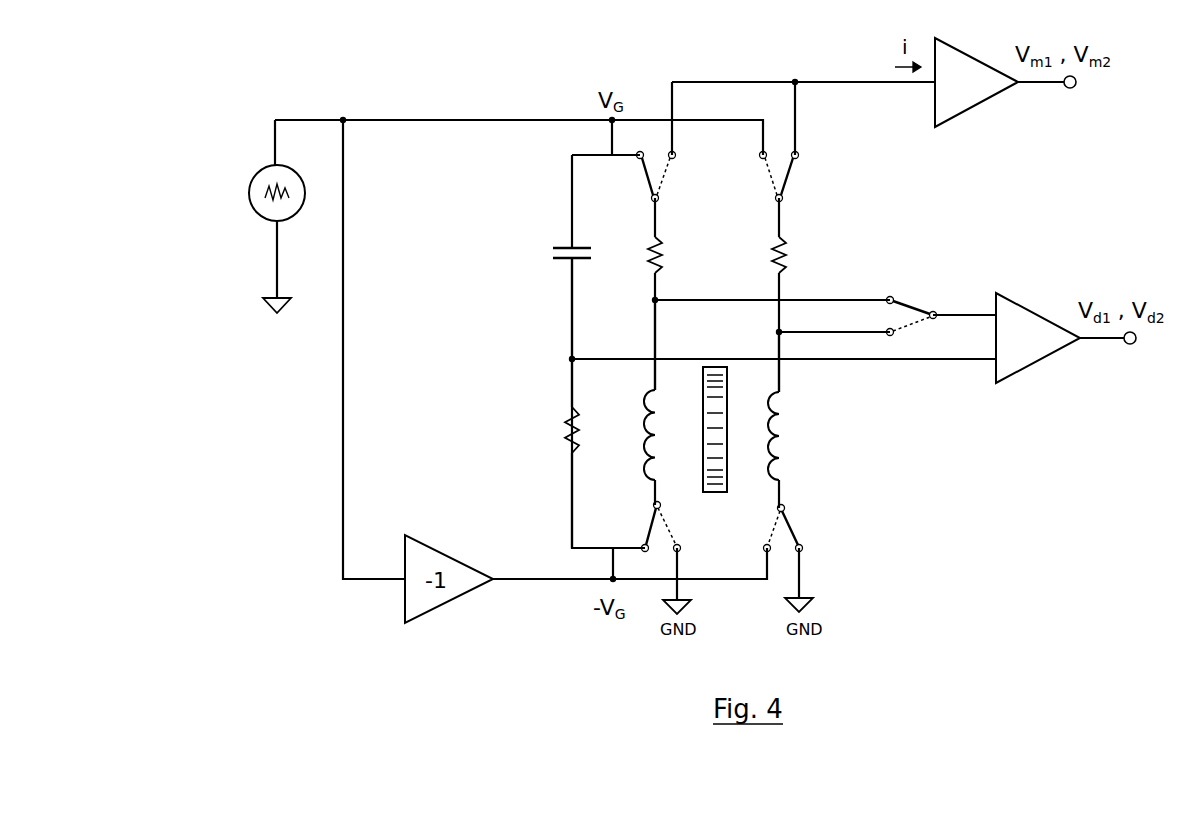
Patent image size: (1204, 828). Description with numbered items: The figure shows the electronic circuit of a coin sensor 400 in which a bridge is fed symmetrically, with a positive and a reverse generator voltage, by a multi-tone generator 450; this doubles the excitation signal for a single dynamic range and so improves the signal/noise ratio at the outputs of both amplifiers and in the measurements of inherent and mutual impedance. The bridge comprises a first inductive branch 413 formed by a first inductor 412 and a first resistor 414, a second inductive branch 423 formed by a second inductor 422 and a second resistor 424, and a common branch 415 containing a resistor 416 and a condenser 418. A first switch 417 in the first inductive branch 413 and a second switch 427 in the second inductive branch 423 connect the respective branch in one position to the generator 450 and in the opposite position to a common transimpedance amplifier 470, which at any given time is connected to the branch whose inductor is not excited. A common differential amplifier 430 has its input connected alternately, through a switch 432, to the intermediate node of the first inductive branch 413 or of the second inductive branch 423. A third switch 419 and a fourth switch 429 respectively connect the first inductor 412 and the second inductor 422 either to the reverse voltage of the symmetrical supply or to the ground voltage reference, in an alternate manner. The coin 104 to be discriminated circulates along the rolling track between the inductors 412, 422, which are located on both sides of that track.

The coin sensor 400 is at (354, 68).
The multi-tone generator 450 is at (265, 208).
The condenser 418 is at (565, 247).
The first switch 417 is at (647, 172).
The second switch 427 is at (786, 172).
The second resistor 424 is at (786, 266).
The first resistor 414 is at (650, 268).
The common branch 415 is at (570, 312).
The first inductive branch 413 is at (654, 334).
The resistor 416 is at (566, 432).
The first inductor 412 is at (648, 449).
The third switch 419 is at (650, 531).
The coin 104 is at (712, 494).
The fourth switch 429 is at (796, 527).
The second inductive branch 423 is at (781, 373).
The second inductor 422 is at (781, 440).
The switch 432 is at (913, 309).
The common differential amplifier 430 is at (1035, 333).
The common transimpedance amplifier 470 is at (980, 86).